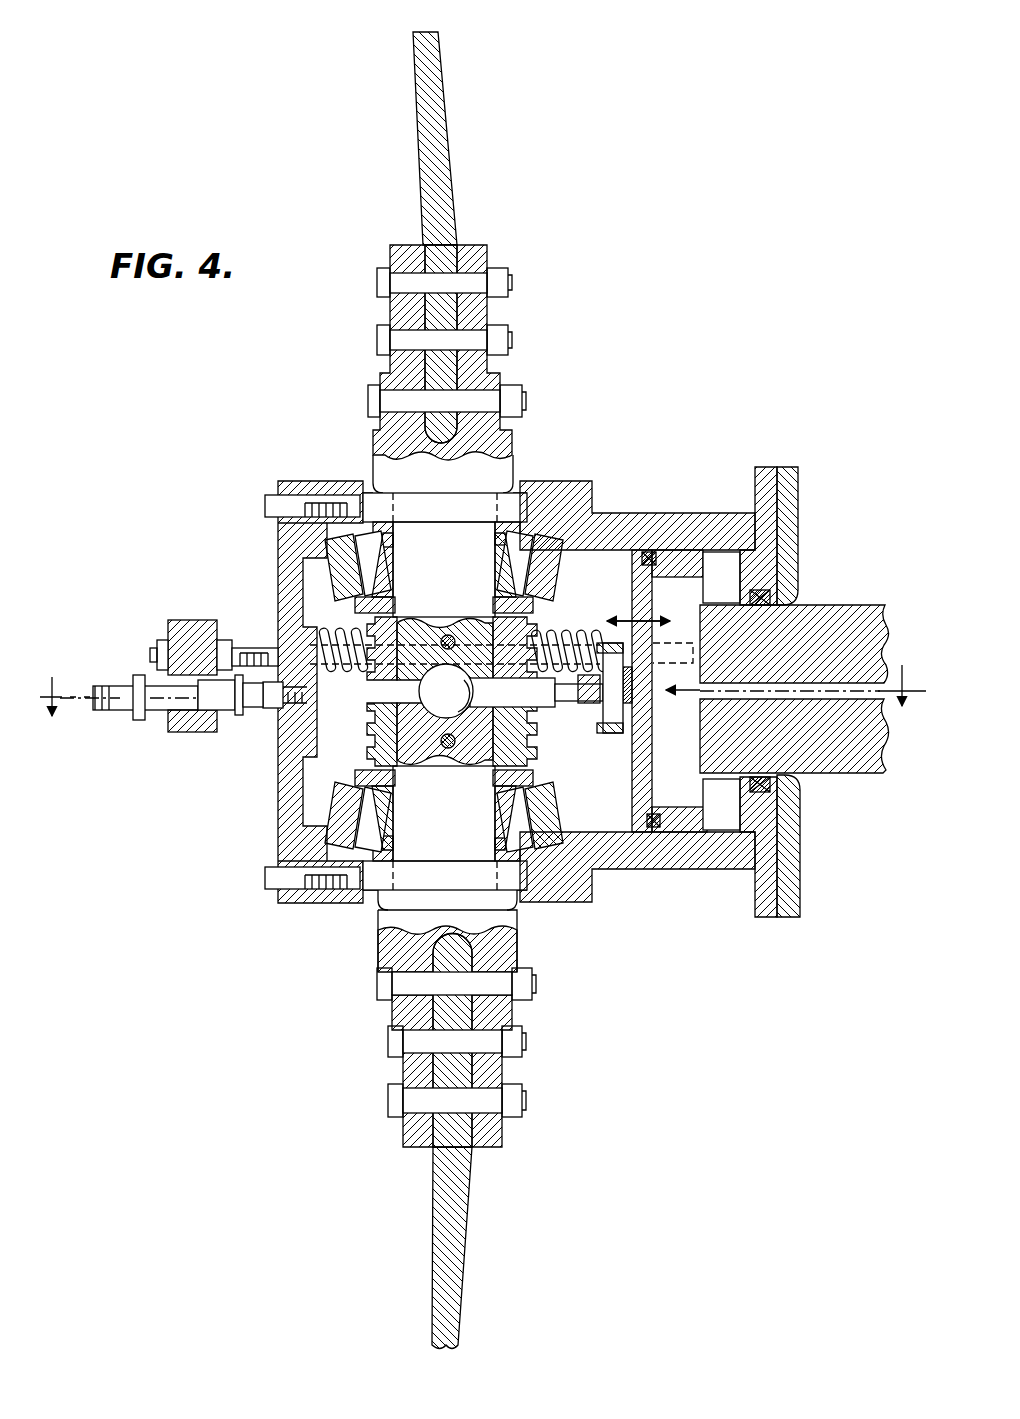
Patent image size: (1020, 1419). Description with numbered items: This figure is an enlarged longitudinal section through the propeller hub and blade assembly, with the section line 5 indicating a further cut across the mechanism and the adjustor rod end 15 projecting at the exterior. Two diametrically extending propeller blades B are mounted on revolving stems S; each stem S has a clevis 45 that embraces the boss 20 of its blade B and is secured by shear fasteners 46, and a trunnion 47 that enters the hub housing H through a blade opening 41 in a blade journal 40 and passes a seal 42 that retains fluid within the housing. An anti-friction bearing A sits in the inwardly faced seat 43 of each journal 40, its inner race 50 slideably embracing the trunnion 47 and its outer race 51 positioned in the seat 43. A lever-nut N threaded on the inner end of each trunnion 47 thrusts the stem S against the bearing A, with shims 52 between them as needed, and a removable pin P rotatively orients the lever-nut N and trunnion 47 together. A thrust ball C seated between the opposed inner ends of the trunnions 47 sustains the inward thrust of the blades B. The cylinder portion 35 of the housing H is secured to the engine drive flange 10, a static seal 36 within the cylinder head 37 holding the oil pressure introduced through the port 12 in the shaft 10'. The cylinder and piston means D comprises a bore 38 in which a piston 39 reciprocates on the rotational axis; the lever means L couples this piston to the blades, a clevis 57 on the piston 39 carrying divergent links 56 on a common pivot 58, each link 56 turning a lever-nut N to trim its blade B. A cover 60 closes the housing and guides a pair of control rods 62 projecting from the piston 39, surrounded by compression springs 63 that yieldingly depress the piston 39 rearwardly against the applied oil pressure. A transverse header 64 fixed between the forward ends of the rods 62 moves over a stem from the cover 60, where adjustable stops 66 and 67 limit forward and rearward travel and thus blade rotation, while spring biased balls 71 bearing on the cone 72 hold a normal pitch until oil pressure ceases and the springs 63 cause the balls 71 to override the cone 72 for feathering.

The section line 5- 5 is at (481, 676).
The propeller blade B is at (410, 108).
The boss 20 is at (462, 236).
The clevis 45 is at (487, 323).
The shear fasteners 46 is at (512, 284).
The stem S is at (520, 454).
The blade opening 41 is at (516, 480).
The hub housing H is at (334, 475).
The blade journal 40 is at (300, 534).
The seat 43 is at (320, 568).
The seal 42 is at (445, 691).
The trunnion 47 is at (446, 691).
The inner race 50 is at (556, 764).
The anti-friction bearing A is at (525, 565).
The outer race 51 is at (345, 586).
The shims 52 is at (530, 628).
The control rods 62 is at (262, 650).
The compression springs 63 is at (592, 640).
The removable pin P is at (446, 636).
The lever-nut N is at (376, 702).
The link 56 is at (566, 692).
The clevis 57 is at (628, 712).
The lever means L is at (578, 712).
The thrust ball C is at (446, 691).
The cylinder portion 35 is at (626, 524).
The cylinder and piston means D is at (676, 545).
The piston 39 is at (686, 832).
The bore 38 is at (718, 552).
The static seal 36 is at (780, 598).
The cylinder head 37 is at (770, 800).
The drive flange 10 is at (810, 692).
The shaft 10' is at (794, 707).
The port 12 is at (700, 694).
The common pivot 58 is at (636, 668).
The adjusting rod 15 is at (102, 708).
The transverse header 64 is at (192, 736).
The stop 66 is at (116, 680).
The cover 60 is at (282, 786).
The cone 72 is at (206, 712).
The stop 67 is at (240, 716).
The spring biased balls 71 is at (230, 714).